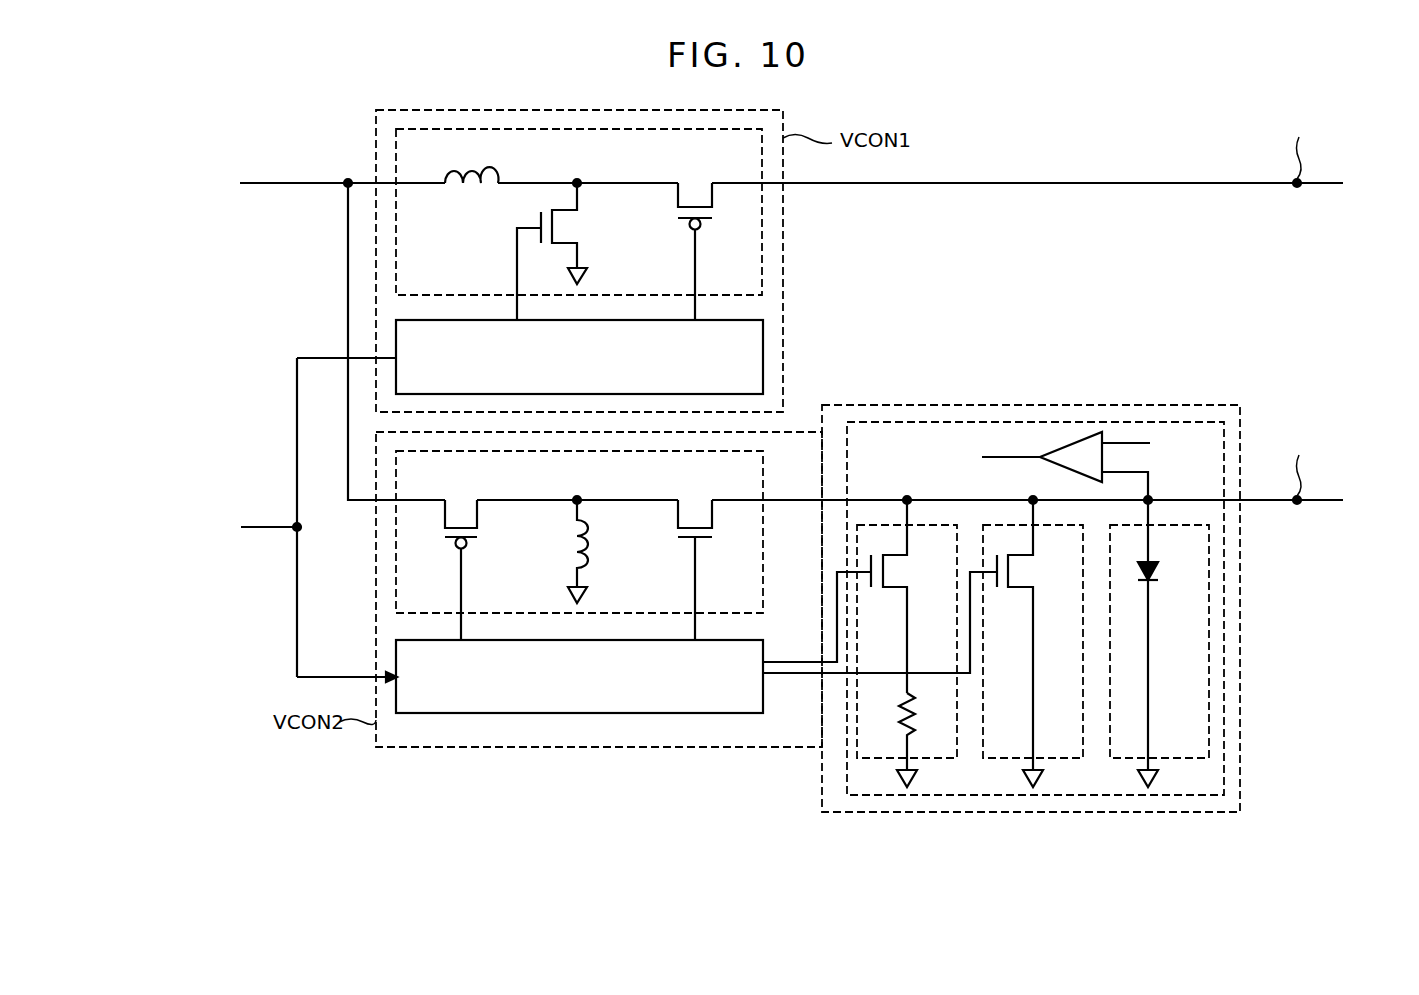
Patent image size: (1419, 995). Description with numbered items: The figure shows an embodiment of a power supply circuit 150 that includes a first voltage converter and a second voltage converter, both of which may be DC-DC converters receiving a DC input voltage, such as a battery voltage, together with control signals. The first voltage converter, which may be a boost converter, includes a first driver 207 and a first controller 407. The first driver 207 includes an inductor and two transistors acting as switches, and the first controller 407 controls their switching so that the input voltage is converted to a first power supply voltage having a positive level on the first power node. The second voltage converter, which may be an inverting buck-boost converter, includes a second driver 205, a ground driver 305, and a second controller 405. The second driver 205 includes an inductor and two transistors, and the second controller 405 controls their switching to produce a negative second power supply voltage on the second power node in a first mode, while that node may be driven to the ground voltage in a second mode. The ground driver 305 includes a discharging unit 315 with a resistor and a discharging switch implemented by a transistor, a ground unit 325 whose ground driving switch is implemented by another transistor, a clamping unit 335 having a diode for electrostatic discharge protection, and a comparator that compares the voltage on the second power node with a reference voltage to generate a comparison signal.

The power supply circuit 150 is at (876, 98).
The second driver 205 is at (396, 588).
The first driver 207 is at (762, 250).
The ground driver 305 is at (1095, 795).
The discharging unit 315 is at (880, 758).
The ground unit 325 is at (997, 758).
The clamping unit 335 is at (1187, 758).
The second controller 405 is at (583, 713).
The first controller 407 is at (763, 350).